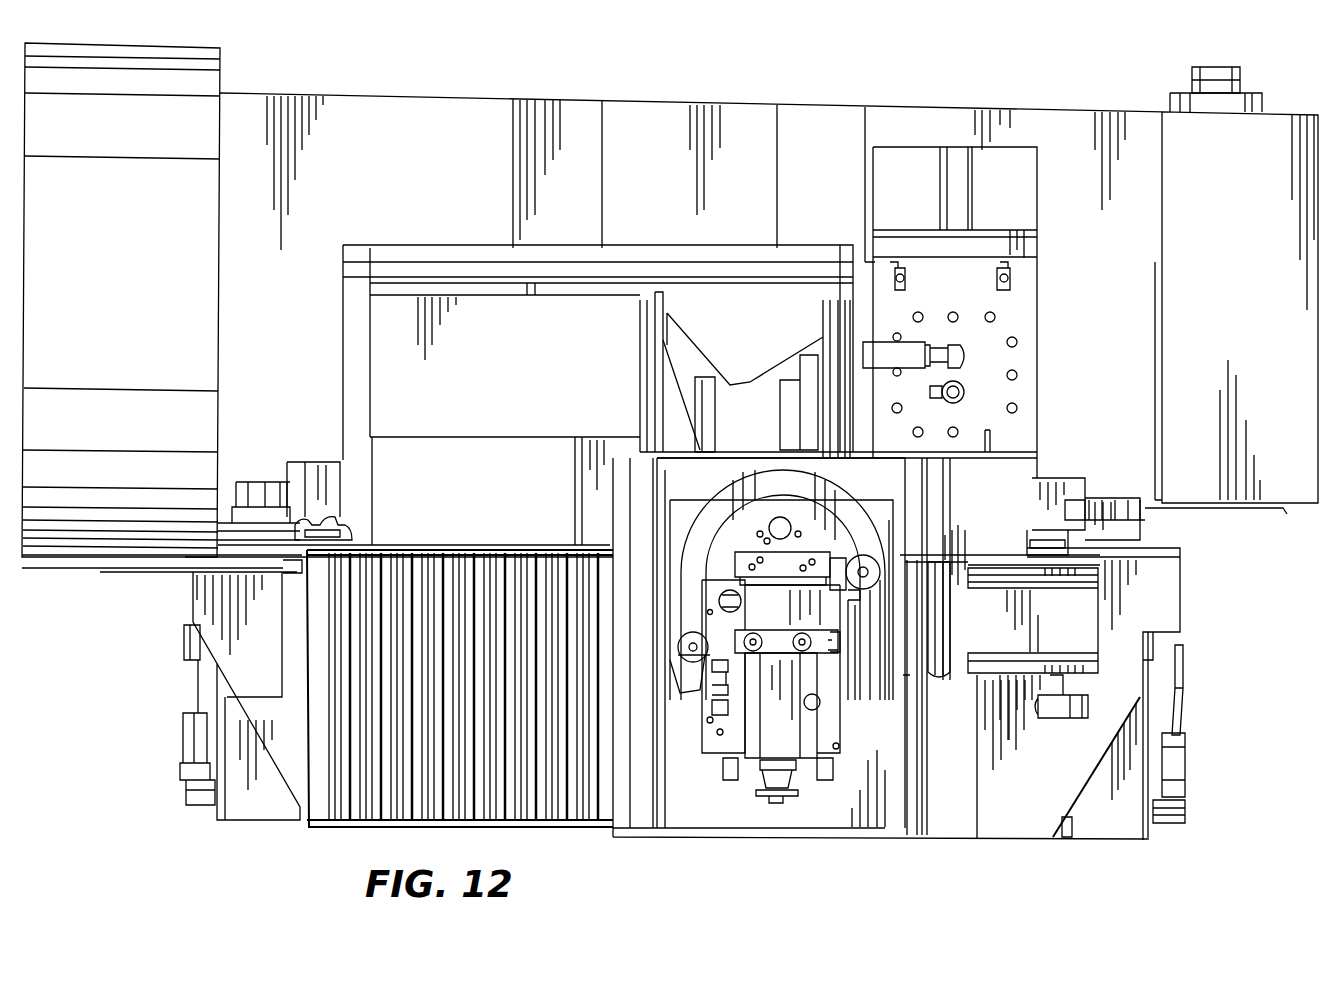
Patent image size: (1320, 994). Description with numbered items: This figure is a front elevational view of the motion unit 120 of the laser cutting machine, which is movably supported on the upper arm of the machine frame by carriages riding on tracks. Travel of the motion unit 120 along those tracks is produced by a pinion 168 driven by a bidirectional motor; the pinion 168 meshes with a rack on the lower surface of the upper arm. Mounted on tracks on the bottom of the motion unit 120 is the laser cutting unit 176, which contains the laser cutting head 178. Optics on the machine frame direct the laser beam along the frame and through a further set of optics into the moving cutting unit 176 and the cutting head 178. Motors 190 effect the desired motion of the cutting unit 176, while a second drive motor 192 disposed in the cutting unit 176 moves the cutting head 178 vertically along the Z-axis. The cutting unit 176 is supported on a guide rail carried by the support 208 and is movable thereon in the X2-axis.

The motion unit 120 is at (750, 107).
The pinion 168 is at (1190, 75).
The laser cutting unit 176 is at (215, 815).
The laser cutting head 178 is at (772, 747).
The motors 190 is at (1150, 651).
The second drive motor 192 is at (1078, 615).
The support 208 is at (1093, 722).